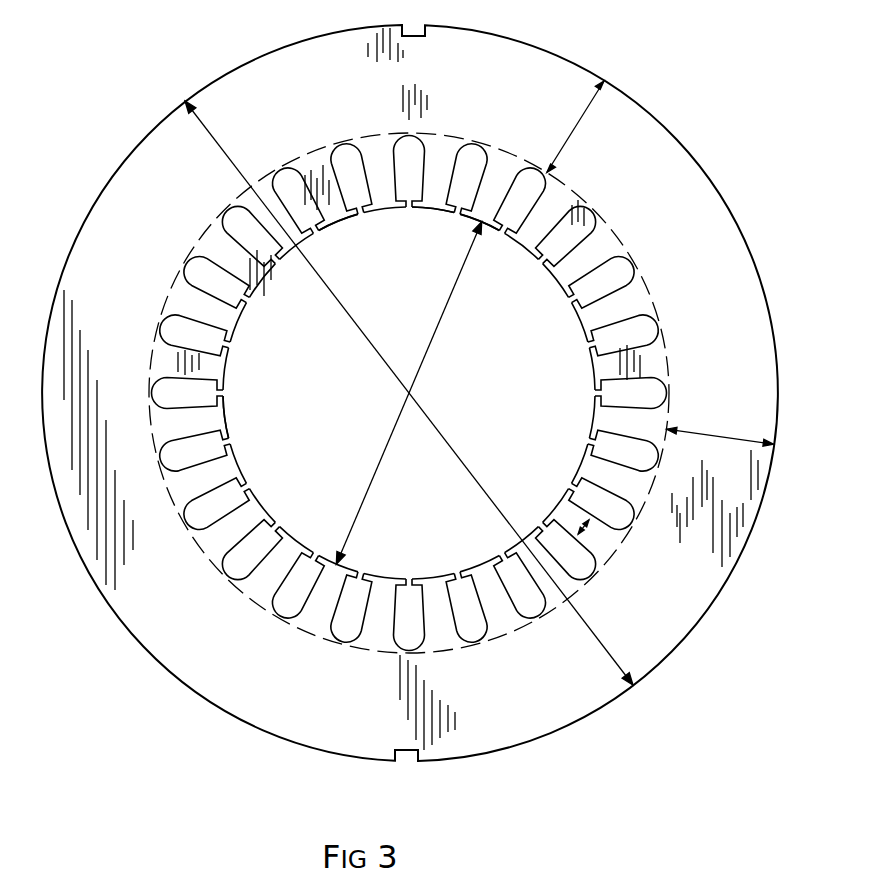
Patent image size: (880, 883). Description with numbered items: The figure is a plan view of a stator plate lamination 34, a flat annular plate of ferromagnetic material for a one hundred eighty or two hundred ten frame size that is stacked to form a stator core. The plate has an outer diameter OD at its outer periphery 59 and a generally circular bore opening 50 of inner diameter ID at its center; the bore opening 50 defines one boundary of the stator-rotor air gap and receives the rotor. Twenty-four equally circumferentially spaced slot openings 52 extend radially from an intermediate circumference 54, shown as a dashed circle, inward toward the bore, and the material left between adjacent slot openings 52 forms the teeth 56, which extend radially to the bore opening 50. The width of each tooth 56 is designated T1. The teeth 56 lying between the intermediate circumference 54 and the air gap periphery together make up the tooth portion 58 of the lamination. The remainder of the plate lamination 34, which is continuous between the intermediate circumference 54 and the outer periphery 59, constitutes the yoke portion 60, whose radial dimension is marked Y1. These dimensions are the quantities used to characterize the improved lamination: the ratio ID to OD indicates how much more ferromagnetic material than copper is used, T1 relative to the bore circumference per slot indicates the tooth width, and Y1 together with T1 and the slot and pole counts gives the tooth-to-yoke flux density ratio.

The stator plate lamination 34 is at (681, 140).
The bore opening 50 is at (592, 416).
The slot openings 52 is at (462, 178).
The intermediate circumference 54 is at (667, 365).
The teeth 56 is at (230, 322).
The tooth portion 58 is at (378, 612).
The outer periphery 59 is at (497, 30).
The yoke portion 60 is at (564, 145).
The outer diameter OD is at (363, 337).
The inner diameter ID is at (438, 334).
The yoke dimension Y1 is at (709, 435).
The tooth width T1 is at (580, 537).